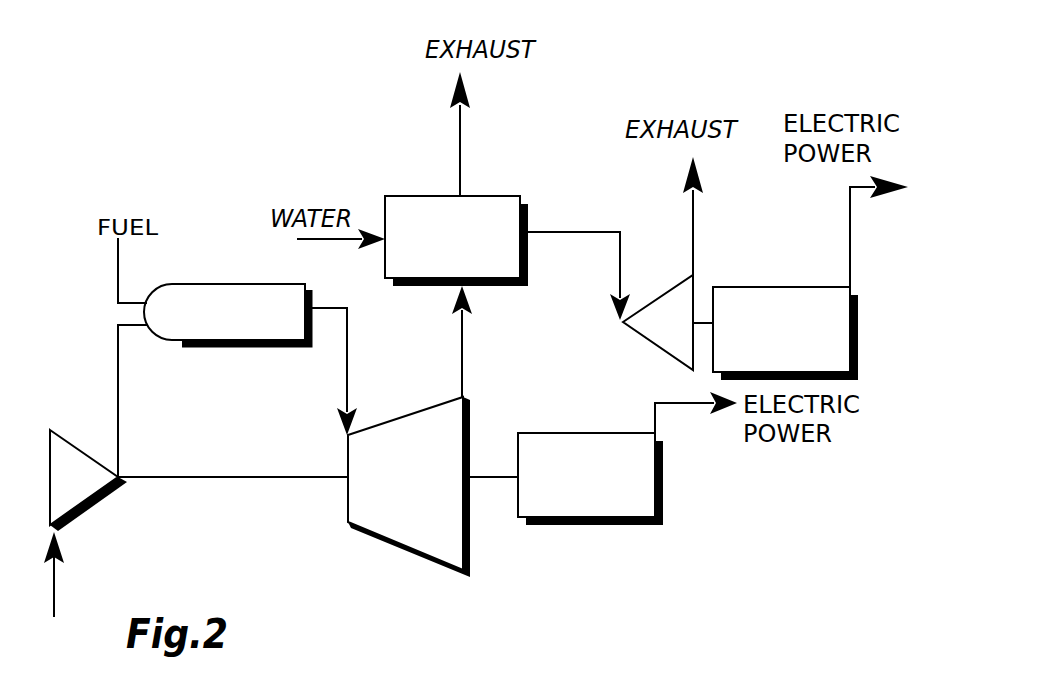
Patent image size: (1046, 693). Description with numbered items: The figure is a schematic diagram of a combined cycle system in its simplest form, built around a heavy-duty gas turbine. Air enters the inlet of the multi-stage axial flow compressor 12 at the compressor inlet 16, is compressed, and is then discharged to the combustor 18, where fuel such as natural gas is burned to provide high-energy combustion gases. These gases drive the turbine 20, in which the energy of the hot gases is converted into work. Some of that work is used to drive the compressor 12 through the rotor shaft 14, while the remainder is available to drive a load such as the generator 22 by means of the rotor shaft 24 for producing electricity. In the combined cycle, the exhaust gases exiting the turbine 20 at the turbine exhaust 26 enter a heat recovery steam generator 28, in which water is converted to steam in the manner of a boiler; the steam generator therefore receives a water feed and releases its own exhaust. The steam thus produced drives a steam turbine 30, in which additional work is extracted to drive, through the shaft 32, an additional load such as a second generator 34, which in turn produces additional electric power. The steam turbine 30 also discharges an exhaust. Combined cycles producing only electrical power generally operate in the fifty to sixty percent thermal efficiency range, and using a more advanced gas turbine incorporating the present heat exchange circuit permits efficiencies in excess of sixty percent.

The multi-stage axial flow compressor 12 is at (84, 489).
The rotor shaft 14 is at (232, 477).
The compressor inlet 16 is at (66, 579).
The combustor 18 is at (236, 326).
The turbine 20 is at (422, 490).
The generator 22 is at (600, 484).
The rotor shaft 24 is at (482, 479).
The turbine exhaust 26 is at (462, 385).
The heat recovery steam generator 28 is at (468, 245).
The steam turbine 30 is at (682, 333).
The shaft 32 is at (700, 320).
The second generator 34 is at (800, 337).